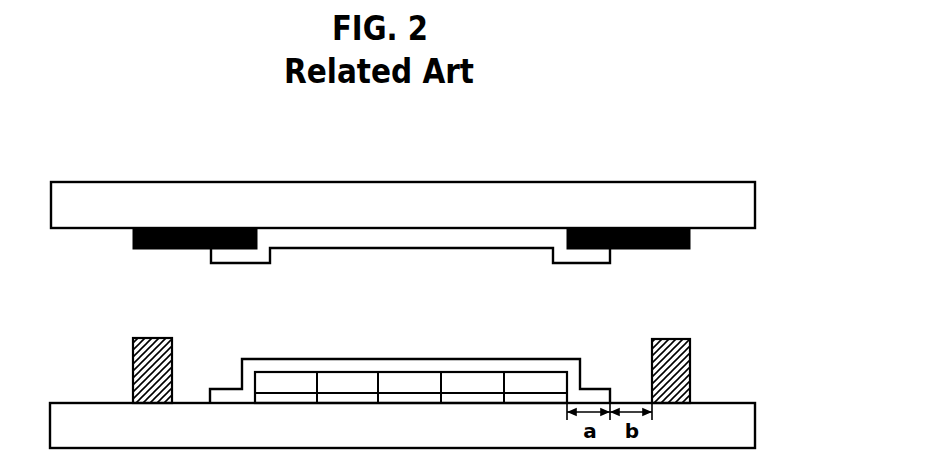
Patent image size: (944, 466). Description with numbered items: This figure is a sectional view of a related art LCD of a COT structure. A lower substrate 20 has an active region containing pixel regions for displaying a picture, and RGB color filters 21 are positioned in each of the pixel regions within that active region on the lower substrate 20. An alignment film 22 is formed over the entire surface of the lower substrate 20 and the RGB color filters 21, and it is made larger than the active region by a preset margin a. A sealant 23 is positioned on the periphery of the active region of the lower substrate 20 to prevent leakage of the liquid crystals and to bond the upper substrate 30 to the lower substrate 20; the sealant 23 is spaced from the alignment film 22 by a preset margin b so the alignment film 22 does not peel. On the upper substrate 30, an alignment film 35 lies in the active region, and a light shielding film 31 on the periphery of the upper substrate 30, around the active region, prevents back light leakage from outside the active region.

The lower substrate 20 is at (755, 422).
The RGB color filters 21 is at (427, 378).
The alignment film 22 is at (522, 359).
The sealant 23 is at (680, 361).
The upper substrate 30 is at (755, 207).
The light shielding film 31 is at (232, 228).
The alignment film 35 is at (514, 235).